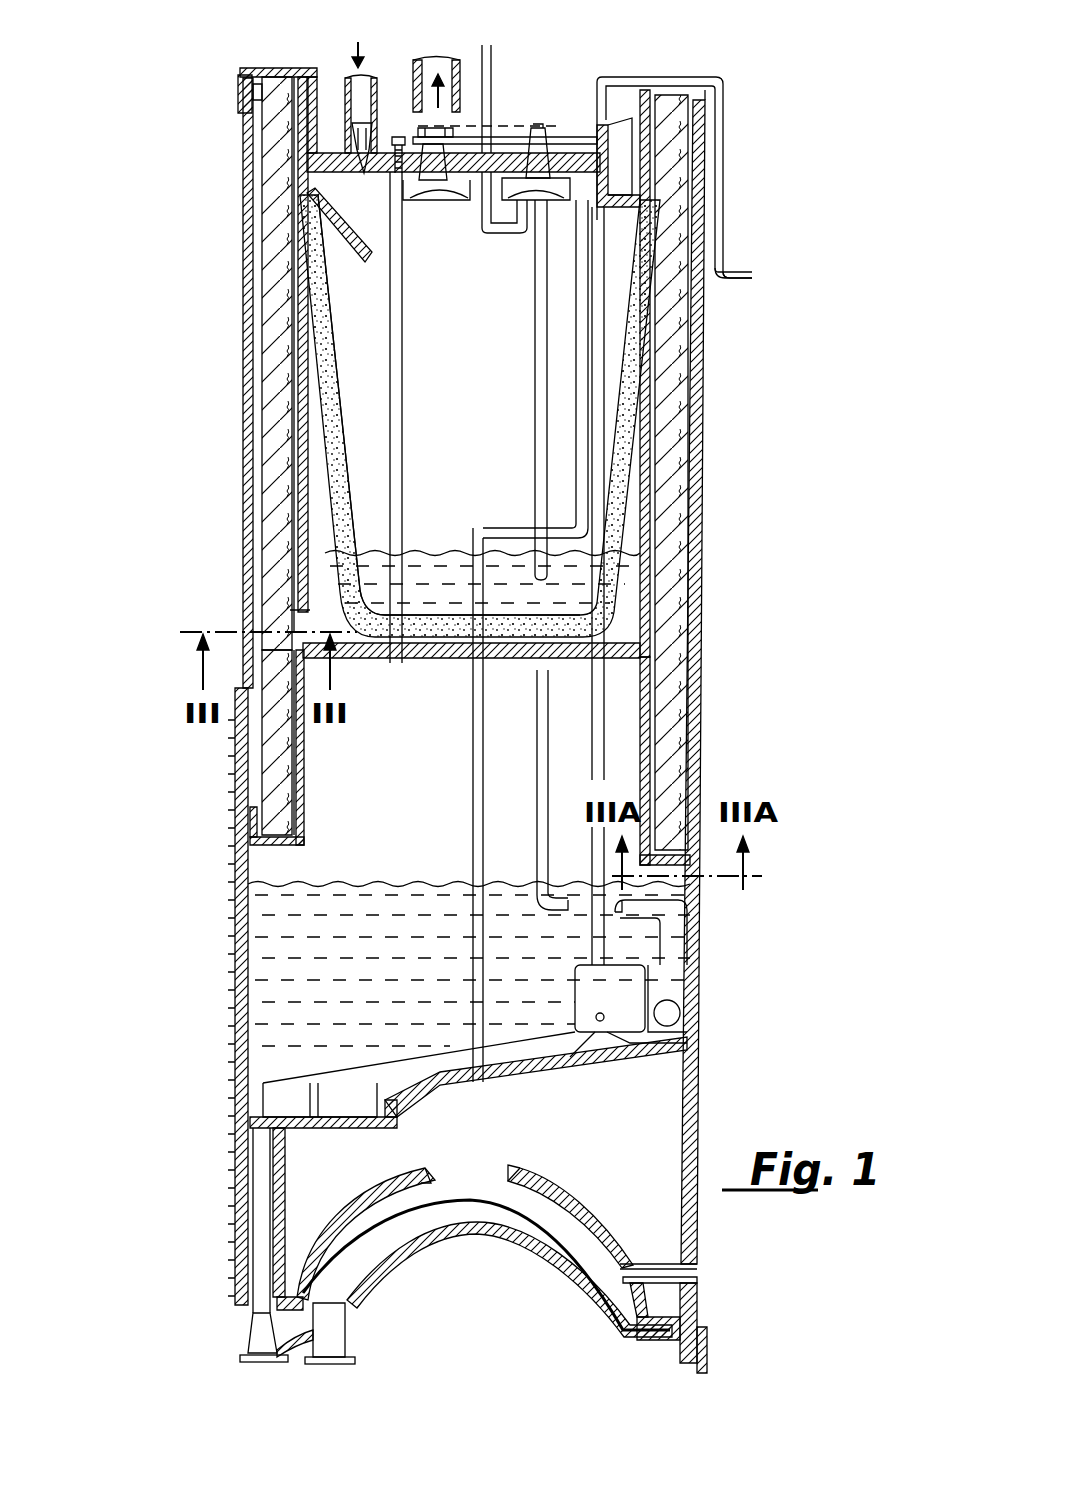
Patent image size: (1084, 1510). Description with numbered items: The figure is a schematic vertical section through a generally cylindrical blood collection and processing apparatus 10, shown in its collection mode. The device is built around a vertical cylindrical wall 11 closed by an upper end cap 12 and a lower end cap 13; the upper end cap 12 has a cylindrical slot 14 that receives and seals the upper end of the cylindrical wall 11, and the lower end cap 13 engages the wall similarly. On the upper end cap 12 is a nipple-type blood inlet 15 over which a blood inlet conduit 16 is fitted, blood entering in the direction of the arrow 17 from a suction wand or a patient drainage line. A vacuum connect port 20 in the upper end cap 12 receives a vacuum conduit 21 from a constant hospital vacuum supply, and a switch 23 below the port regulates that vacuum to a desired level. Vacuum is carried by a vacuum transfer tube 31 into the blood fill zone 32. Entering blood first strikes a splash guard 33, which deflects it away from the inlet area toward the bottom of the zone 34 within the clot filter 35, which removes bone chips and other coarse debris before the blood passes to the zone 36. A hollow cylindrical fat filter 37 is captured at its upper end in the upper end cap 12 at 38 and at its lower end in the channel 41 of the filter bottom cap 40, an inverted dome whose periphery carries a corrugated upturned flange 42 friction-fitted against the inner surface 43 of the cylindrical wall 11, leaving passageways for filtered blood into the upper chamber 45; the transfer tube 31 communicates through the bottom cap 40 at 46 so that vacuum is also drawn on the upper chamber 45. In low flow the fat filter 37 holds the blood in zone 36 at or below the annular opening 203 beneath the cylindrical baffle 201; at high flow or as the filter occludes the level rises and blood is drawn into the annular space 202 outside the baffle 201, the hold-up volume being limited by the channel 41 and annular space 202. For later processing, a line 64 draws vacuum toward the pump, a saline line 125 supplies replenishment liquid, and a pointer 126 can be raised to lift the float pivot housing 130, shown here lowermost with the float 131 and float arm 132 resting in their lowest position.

The blood collection and processing apparatus 10 is at (706, 441).
The cylindrical wall 11 is at (703, 538).
The upper end cap 12 is at (238, 77).
The lower end cap 13 is at (237, 1325).
The cylindrical slot 14 is at (250, 92).
The blood inlet 15 is at (362, 152).
The blood inlet conduit 16 is at (345, 82).
The arrow 17 is at (357, 42).
The vacuum connect port 20 is at (418, 153).
The vacuum conduit 21 is at (417, 70).
The switch 23 is at (427, 200).
The vacuum transfer tube 31 is at (402, 287).
The blood fill zone 32 is at (489, 417).
The splash guard 33 is at (357, 243).
The bottom of zone 34 is at (430, 567).
The clot filter 35 is at (323, 387).
The zone 36 is at (320, 557).
The fat filter 37 is at (267, 420).
The capture location in end cap 38 is at (283, 67).
The filter bottom cap 40 is at (637, 697).
The channel 41 is at (287, 782).
The corrugated upturned flange 42 is at (680, 843).
The inner surface 43 is at (687, 722).
The upper chamber 45 is at (380, 920).
The communication opening 46 is at (390, 653).
The vacuum line 64 is at (473, 745).
The saline line 125 is at (538, 370).
The pointer 126 is at (732, 266).
The float pivot housing 130 is at (633, 993).
The float 131 is at (277, 1100).
The float arm 132 is at (340, 1082).
The cylindrical baffle 201 is at (303, 445).
The annular space 202 is at (293, 470).
The annular opening 203 is at (300, 620).